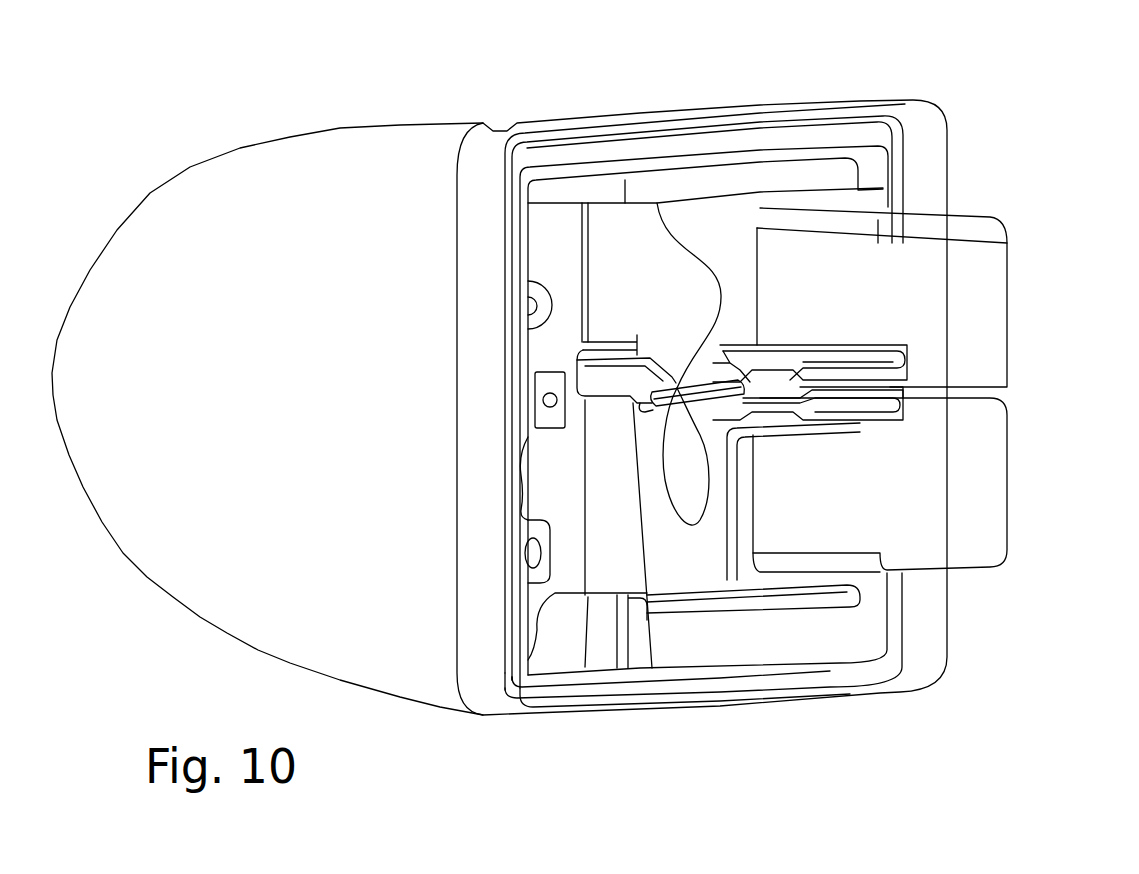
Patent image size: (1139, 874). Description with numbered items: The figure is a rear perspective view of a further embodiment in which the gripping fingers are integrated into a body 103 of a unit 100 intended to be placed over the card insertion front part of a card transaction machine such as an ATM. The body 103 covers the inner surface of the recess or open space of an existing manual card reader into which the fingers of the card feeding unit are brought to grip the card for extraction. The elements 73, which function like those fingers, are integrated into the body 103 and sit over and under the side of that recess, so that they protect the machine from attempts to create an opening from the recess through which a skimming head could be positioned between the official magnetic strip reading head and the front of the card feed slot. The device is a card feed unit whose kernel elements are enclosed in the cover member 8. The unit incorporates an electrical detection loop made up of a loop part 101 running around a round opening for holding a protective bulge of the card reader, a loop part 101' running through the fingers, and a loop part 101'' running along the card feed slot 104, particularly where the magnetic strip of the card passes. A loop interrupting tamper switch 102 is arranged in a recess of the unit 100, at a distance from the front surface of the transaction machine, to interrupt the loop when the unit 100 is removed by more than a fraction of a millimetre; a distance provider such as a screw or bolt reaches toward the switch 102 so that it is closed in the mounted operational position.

The cover member 8 is at (282, 408).
The elements 73 is at (873, 360).
The unit 100 is at (604, 745).
The loop part 101 is at (840, 421).
The loop part 101' is at (924, 384).
The loop part 101'' is at (677, 582).
The loop interrupting tamper switch 102 is at (545, 417).
The body 103 is at (987, 313).
The card feed slot 104 is at (637, 350).